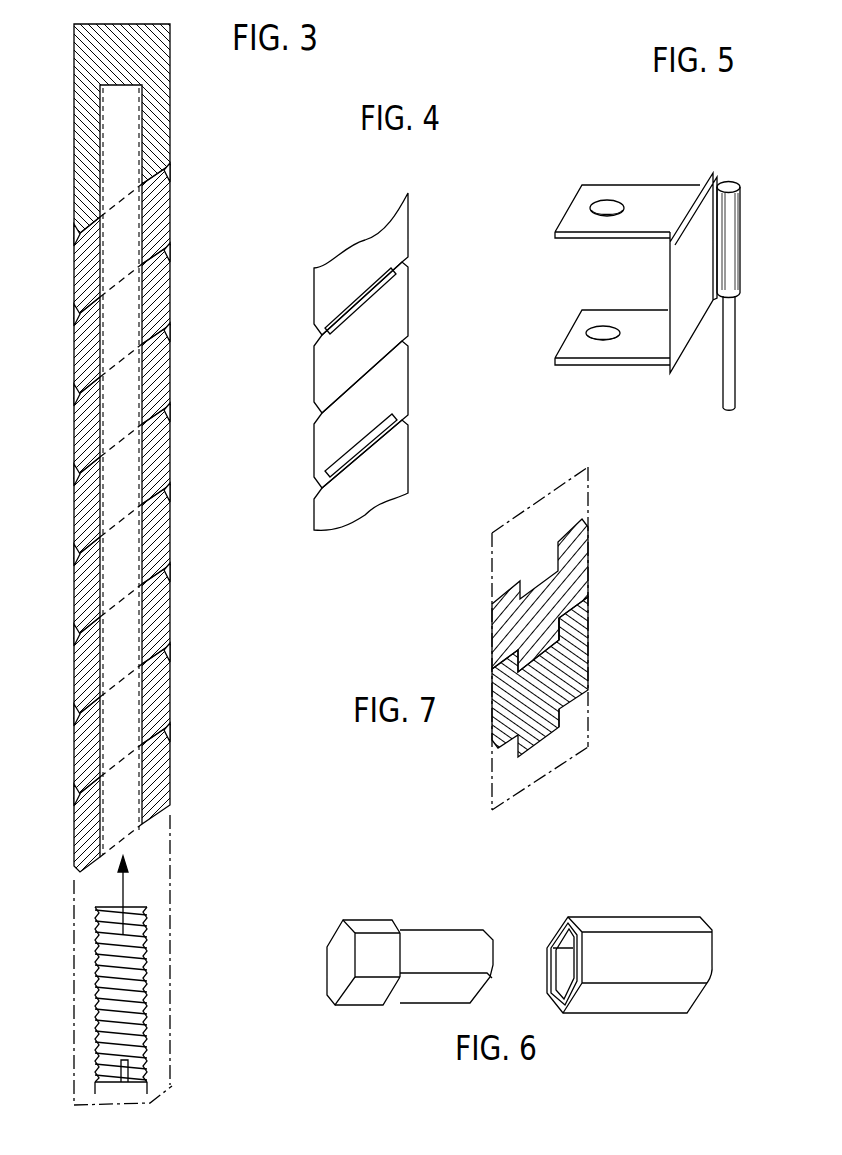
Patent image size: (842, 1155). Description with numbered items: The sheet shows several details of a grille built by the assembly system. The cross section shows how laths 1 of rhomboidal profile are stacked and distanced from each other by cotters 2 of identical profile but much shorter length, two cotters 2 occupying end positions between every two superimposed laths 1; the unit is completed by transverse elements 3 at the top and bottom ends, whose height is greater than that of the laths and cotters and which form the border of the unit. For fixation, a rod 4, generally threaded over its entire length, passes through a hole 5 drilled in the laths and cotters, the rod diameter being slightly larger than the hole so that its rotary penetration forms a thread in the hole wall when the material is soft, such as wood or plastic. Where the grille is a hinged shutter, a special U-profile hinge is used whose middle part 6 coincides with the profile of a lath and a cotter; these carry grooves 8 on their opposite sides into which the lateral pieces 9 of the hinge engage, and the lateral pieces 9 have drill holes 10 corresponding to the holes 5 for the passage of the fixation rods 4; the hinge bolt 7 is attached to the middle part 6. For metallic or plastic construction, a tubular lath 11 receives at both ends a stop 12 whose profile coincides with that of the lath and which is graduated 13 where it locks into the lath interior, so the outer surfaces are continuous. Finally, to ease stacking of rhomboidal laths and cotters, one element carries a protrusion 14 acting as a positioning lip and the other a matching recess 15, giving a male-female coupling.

In FIG. 3, the lath 1 is at (170, 302).
In FIG. 4, the lath 1 is at (338, 357).
In FIG. 7, the lath 1 is at (577, 568).
In FIG. 3, the cotter 2 is at (160, 215).
In FIG. 4, the cotter 2 is at (330, 436).
In FIG. 7, the cotter 2 is at (568, 658).
In FIG. 3, the transverse element 3 is at (160, 70).
In FIG. 3, the rod 4 is at (95, 1020).
In FIG. 3, the hole 5 is at (124, 152).
In FIG. 5, the middle part 6 is at (709, 210).
In FIG. 5, the pin 7 is at (724, 405).
In FIG. 4, the groove 8 is at (346, 312).
In FIG. 5, the lateral piece 9 is at (665, 190).
In FIG. 5, the drill hole 10 is at (607, 204).
In FIG. 6, the tubular lath 11 is at (628, 955).
In FIG. 6, the stop 12 is at (366, 948).
In FIG. 6, the graduated area 13 is at (397, 934).
In FIG. 7, the protrusion 14 is at (560, 630).
In FIG. 7, the recess 15 is at (538, 585).